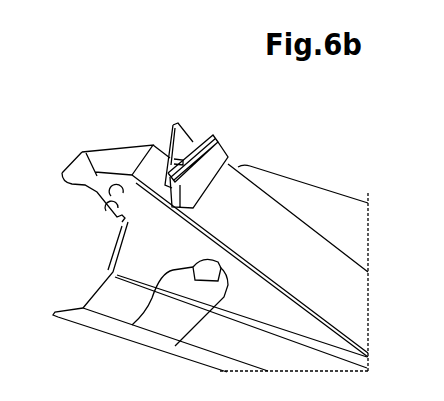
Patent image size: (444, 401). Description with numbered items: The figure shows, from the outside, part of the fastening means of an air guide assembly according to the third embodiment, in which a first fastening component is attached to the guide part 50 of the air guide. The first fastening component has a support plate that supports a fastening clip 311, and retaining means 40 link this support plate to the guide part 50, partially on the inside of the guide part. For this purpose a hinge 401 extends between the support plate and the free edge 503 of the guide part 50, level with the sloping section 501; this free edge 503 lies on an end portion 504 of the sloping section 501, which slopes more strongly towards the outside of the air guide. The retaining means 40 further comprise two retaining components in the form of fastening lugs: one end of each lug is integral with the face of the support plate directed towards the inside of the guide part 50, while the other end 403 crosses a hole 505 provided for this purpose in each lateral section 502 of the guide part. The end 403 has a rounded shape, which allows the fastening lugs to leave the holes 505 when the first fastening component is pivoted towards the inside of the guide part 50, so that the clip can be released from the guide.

The guide part 50 is at (96, 258).
The fastening clip 311 is at (92, 150).
The hinge 401 is at (166, 138).
The retaining means 40 is at (200, 127).
The free edge 503 is at (218, 136).
The end portion 504 is at (225, 166).
The sloping section 501 is at (253, 217).
The lateral section 502 is at (133, 250).
The end 403 is at (132, 325).
The hole 505 is at (175, 346).